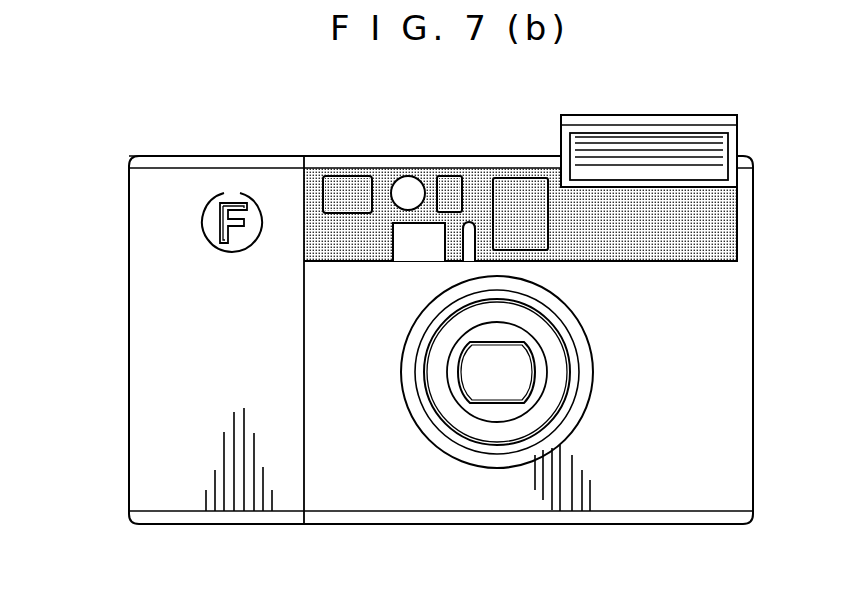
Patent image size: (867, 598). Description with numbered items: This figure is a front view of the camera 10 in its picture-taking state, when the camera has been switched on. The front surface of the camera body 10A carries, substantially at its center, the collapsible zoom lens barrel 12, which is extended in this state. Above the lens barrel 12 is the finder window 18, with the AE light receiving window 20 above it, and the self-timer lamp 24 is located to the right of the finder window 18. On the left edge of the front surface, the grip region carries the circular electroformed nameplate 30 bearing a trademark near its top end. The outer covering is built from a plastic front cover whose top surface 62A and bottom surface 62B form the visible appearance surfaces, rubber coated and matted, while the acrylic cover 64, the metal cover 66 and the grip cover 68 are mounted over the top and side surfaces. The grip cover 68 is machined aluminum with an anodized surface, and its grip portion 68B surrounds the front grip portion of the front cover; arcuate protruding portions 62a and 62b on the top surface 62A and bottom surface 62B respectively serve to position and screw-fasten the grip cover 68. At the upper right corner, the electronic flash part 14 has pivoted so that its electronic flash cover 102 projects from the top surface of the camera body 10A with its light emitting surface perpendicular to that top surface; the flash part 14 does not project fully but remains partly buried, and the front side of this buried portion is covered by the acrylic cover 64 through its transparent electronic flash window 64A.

The camera 10 is at (92, 157).
The camera body 10A is at (735, 343).
The lens barrel 12 is at (557, 393).
The electronic flash part 14 is at (747, 105).
The finder window 18 is at (418, 253).
The AE light receiving window 20 is at (405, 187).
The self-timer lamp 24 is at (470, 225).
The electroformed nameplate 30 is at (235, 247).
The protruding portion 62a is at (215, 157).
The top surface 62A is at (463, 157).
The protruding portion 62b is at (233, 520).
The bottom surface 62B is at (430, 518).
The acrylic cover 64 is at (732, 235).
The electronic flash window 64A is at (723, 175).
The metal cover 66 is at (738, 407).
The grip cover 68 is at (142, 400).
The grip portion 68B is at (143, 470).
The electronic flash cover 102 is at (627, 113).